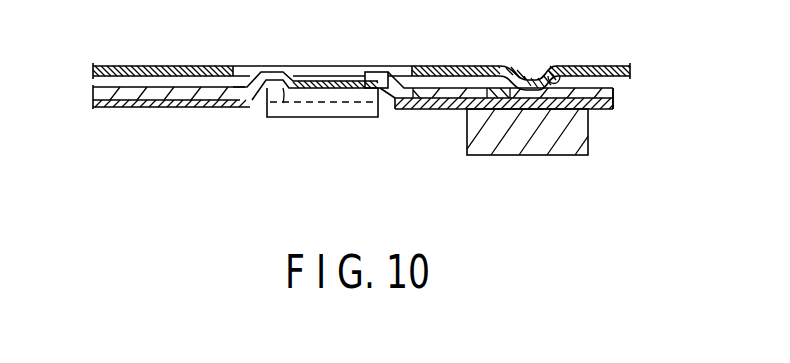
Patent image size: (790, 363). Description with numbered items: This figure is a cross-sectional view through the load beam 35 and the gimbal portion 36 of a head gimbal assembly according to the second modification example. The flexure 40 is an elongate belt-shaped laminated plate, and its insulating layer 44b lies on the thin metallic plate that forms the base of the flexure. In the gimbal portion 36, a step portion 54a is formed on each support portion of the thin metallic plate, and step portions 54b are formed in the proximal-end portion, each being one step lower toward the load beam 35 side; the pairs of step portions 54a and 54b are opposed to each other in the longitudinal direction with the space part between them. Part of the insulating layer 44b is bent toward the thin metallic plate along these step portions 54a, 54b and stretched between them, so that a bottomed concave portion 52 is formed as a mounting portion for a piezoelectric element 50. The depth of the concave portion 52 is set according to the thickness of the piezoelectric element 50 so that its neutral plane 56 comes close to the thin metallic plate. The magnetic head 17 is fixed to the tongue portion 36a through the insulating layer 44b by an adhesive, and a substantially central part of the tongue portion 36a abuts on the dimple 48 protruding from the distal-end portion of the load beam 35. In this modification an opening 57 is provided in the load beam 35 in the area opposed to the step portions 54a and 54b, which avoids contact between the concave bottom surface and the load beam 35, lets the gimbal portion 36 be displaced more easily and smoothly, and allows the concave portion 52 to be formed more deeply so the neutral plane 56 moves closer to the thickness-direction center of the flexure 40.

The load beam 35 is at (160, 64).
The step portion 54b is at (266, 70).
The step portion 54a is at (380, 71).
The opening 57 is at (414, 66).
The dimple 48 is at (548, 68).
The flexure 40 is at (137, 108).
The insulating layer 44b is at (218, 106).
The concave portion 52 is at (272, 117).
The piezoelectric element 50 is at (306, 117).
The neutral plane 56 is at (347, 103).
The gimbal portion 36 is at (393, 128).
The tongue portion 36a is at (610, 106).
The magnetic head 17 is at (549, 156).